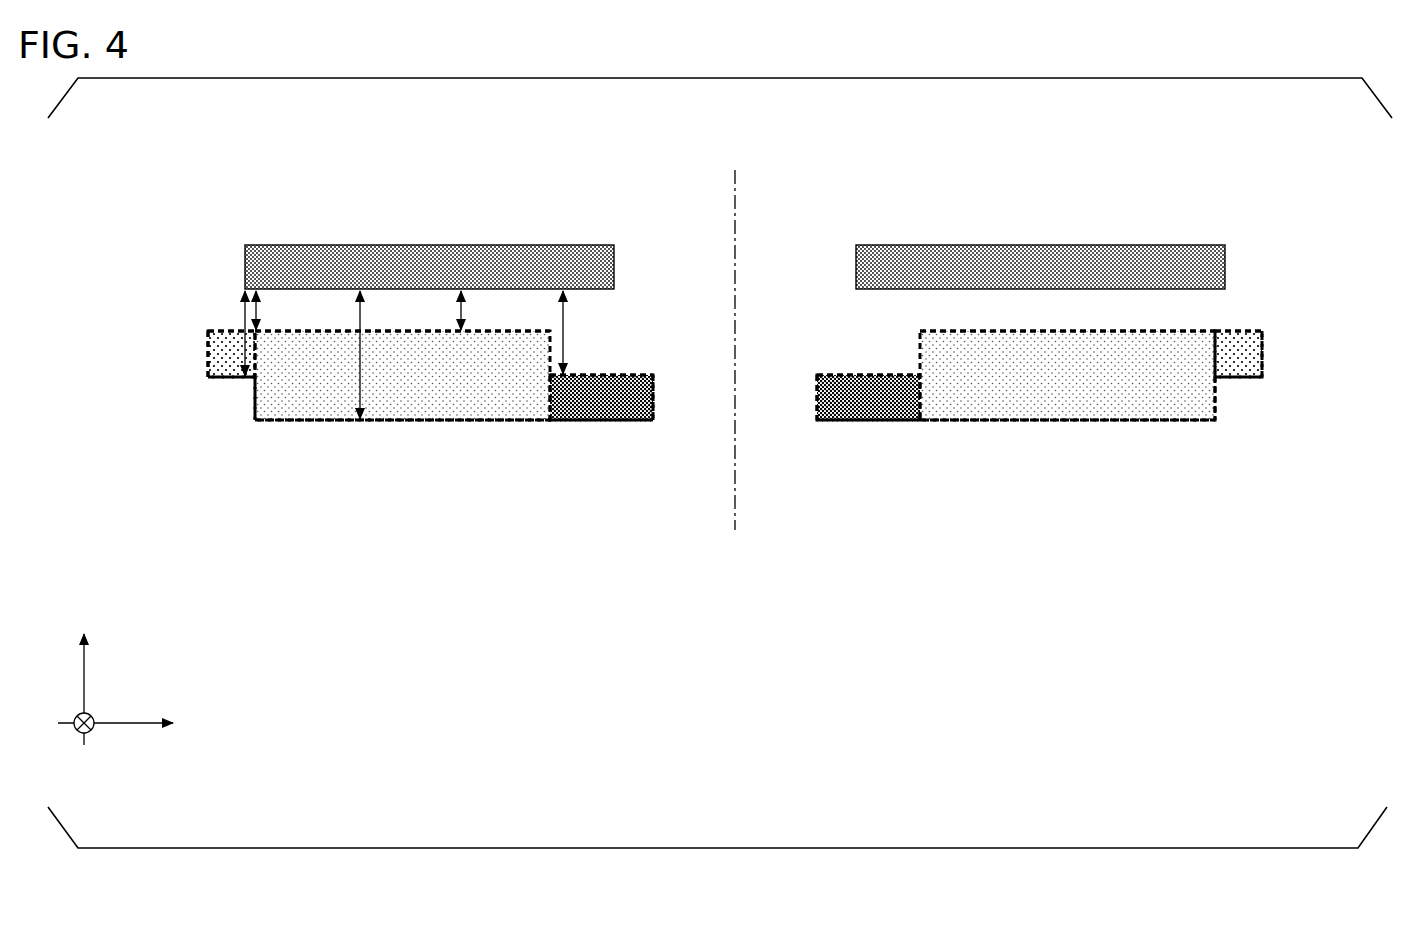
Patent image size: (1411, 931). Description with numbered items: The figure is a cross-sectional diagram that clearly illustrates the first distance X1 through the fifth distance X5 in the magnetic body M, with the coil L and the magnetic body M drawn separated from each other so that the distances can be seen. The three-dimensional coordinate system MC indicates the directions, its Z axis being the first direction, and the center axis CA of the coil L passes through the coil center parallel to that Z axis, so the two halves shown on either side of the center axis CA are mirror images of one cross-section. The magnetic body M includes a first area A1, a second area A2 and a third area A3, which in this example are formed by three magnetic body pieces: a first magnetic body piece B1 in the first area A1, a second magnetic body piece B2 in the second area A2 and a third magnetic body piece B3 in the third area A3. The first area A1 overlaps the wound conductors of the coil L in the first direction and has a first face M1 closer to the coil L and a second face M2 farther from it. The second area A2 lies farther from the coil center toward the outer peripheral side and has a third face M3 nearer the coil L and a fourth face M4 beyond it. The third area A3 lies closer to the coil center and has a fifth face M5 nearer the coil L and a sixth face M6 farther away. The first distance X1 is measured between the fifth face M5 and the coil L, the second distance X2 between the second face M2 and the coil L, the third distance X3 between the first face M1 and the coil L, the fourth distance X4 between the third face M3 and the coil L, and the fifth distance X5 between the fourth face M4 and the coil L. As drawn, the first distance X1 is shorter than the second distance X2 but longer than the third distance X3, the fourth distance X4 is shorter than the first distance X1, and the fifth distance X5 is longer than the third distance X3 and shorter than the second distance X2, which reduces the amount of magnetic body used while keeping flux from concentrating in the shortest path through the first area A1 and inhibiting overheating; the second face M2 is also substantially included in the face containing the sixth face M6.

The coil L is at (333, 243).
The center axis CA is at (738, 190).
The magnetic body M is at (410, 432).
The first face M1 is at (434, 327).
The second face M2 is at (468, 428).
The third face M3 is at (225, 323).
The fourth face M4 is at (229, 384).
The fifth face M5 is at (610, 370).
The sixth face M6 is at (622, 427).
The first area A1 is at (287, 423).
The second area A2 is at (208, 341).
The third area A3 is at (638, 375).
The first magnetic body piece B1 is at (388, 409).
The second magnetic body piece B2 is at (230, 359).
The third magnetic body piece B3 is at (600, 411).
The first distance X1 is at (582, 332).
The second distance X2 is at (379, 355).
The third distance X3 is at (479, 310).
The fourth distance X4 is at (268, 333).
The fifth distance X5 is at (243, 345).
The three-dimensional coordinate system MC is at (109, 700).